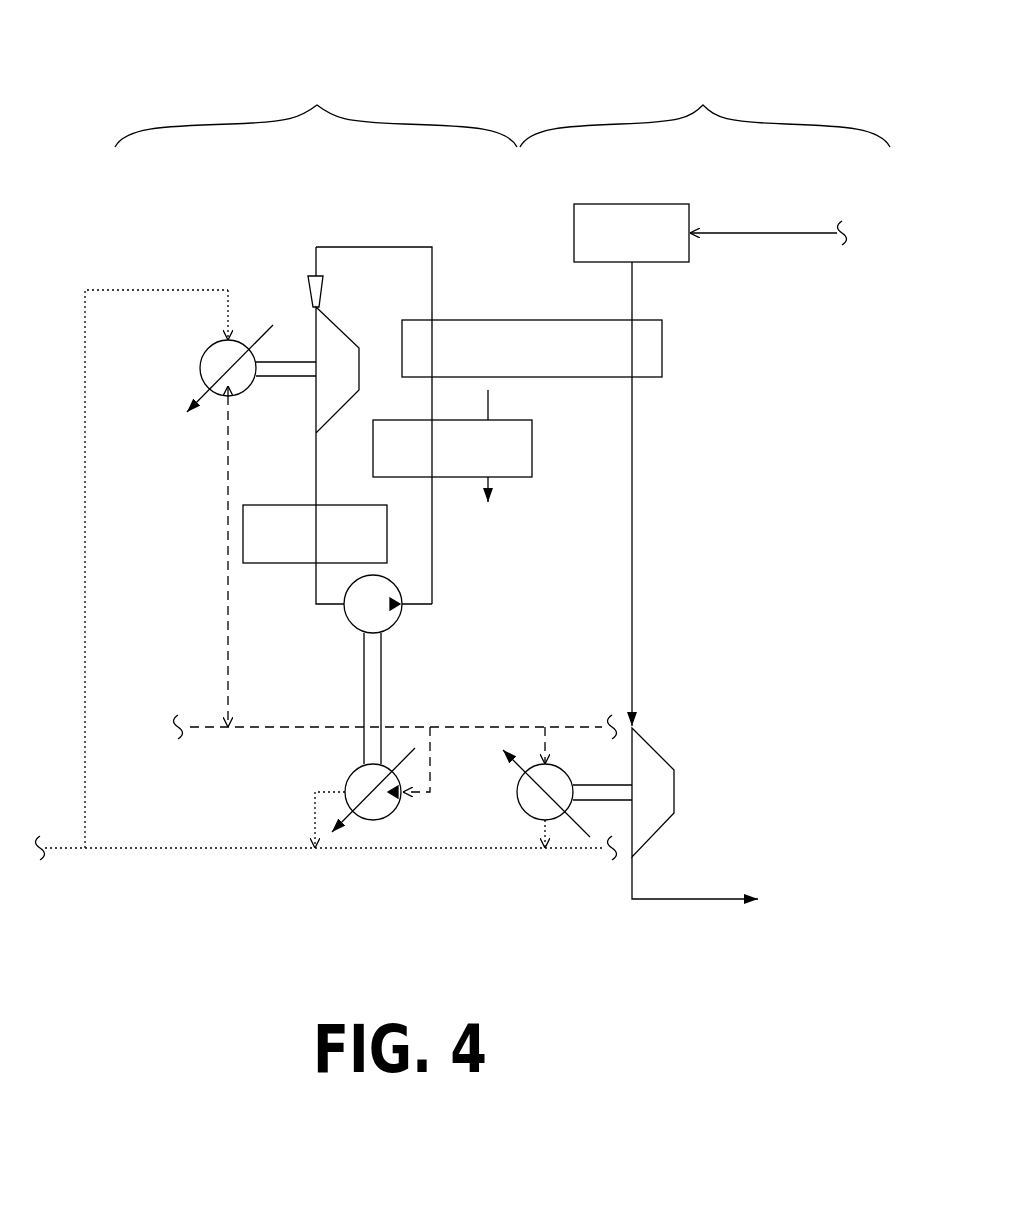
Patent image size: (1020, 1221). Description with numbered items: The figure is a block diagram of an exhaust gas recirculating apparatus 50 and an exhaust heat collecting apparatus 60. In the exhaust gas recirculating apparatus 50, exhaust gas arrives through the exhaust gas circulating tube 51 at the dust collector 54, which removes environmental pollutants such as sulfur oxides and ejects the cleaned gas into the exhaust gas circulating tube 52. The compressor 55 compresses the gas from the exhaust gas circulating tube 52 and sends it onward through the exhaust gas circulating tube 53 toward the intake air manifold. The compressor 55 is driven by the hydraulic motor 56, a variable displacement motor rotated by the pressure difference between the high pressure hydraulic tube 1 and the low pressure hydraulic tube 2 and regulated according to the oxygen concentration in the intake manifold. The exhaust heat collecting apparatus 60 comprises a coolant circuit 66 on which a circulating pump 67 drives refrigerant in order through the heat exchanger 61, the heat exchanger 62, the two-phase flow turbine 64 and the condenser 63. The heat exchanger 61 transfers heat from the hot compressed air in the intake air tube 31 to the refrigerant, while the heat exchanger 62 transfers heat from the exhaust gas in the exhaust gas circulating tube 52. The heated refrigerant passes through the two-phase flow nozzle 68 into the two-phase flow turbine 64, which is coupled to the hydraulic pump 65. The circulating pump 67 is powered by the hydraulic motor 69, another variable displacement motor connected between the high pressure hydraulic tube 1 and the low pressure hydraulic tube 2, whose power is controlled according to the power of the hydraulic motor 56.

The high pressure hydraulic tube 1 is at (253, 725).
The low pressure hydraulic tube 2 is at (237, 850).
The intake air tube 31 is at (492, 398).
The exhaust gas recirculating apparatus 50 is at (705, 110).
The exhaust gas circulating tube 51 is at (800, 233).
The exhaust gas circulating tube 52 is at (632, 410).
The exhaust gas circulating tube 53 is at (683, 899).
The dust collector 54 is at (601, 203).
The compressor 55 is at (655, 752).
The hydraulic motor 56 is at (517, 790).
The exhaust heat collecting apparatus 60 is at (316, 111).
The heat exchanger 61 is at (449, 477).
The heat exchanger 62 is at (450, 318).
The condenser 63 is at (285, 563).
The two-phase flow turbine 64 is at (312, 305).
The hydraulic pump 65 is at (200, 360).
The coolant circuit 66 is at (378, 247).
The circulating pump 67 is at (352, 632).
The two-phase flow nozzle 68 is at (316, 274).
The hydraulic motor 69 is at (350, 773).